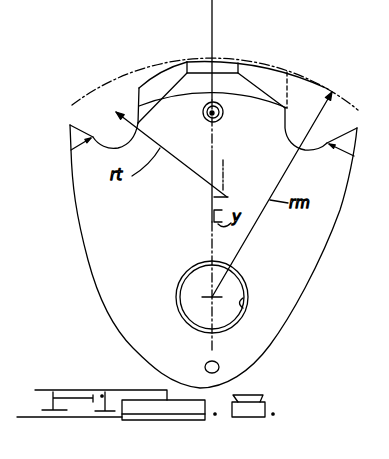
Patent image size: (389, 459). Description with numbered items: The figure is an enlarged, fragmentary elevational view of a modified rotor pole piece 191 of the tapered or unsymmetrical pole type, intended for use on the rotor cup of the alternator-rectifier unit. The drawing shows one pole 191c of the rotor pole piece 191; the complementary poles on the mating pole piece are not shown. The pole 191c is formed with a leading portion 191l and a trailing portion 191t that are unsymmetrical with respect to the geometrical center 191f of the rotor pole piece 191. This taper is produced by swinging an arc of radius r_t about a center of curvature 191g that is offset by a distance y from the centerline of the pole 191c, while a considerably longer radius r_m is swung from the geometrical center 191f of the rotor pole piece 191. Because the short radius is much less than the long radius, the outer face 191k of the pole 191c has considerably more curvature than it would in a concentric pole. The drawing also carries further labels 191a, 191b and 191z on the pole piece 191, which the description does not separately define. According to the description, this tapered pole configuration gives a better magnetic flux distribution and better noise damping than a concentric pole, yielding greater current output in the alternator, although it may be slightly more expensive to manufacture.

The rotor pole piece 191 is at (80, 230).
The body face 191a is at (170, 216).
The body edge portion 191b is at (240, 303).
The pole 191c is at (236, 83).
The geometrical center 191f is at (213, 296).
The center of curvature 191g is at (224, 195).
The outer face 191k is at (160, 80).
The leading portion 191l is at (211, 115).
The trailing portion 191t is at (172, 68).
The tooth segment 191z is at (259, 77).